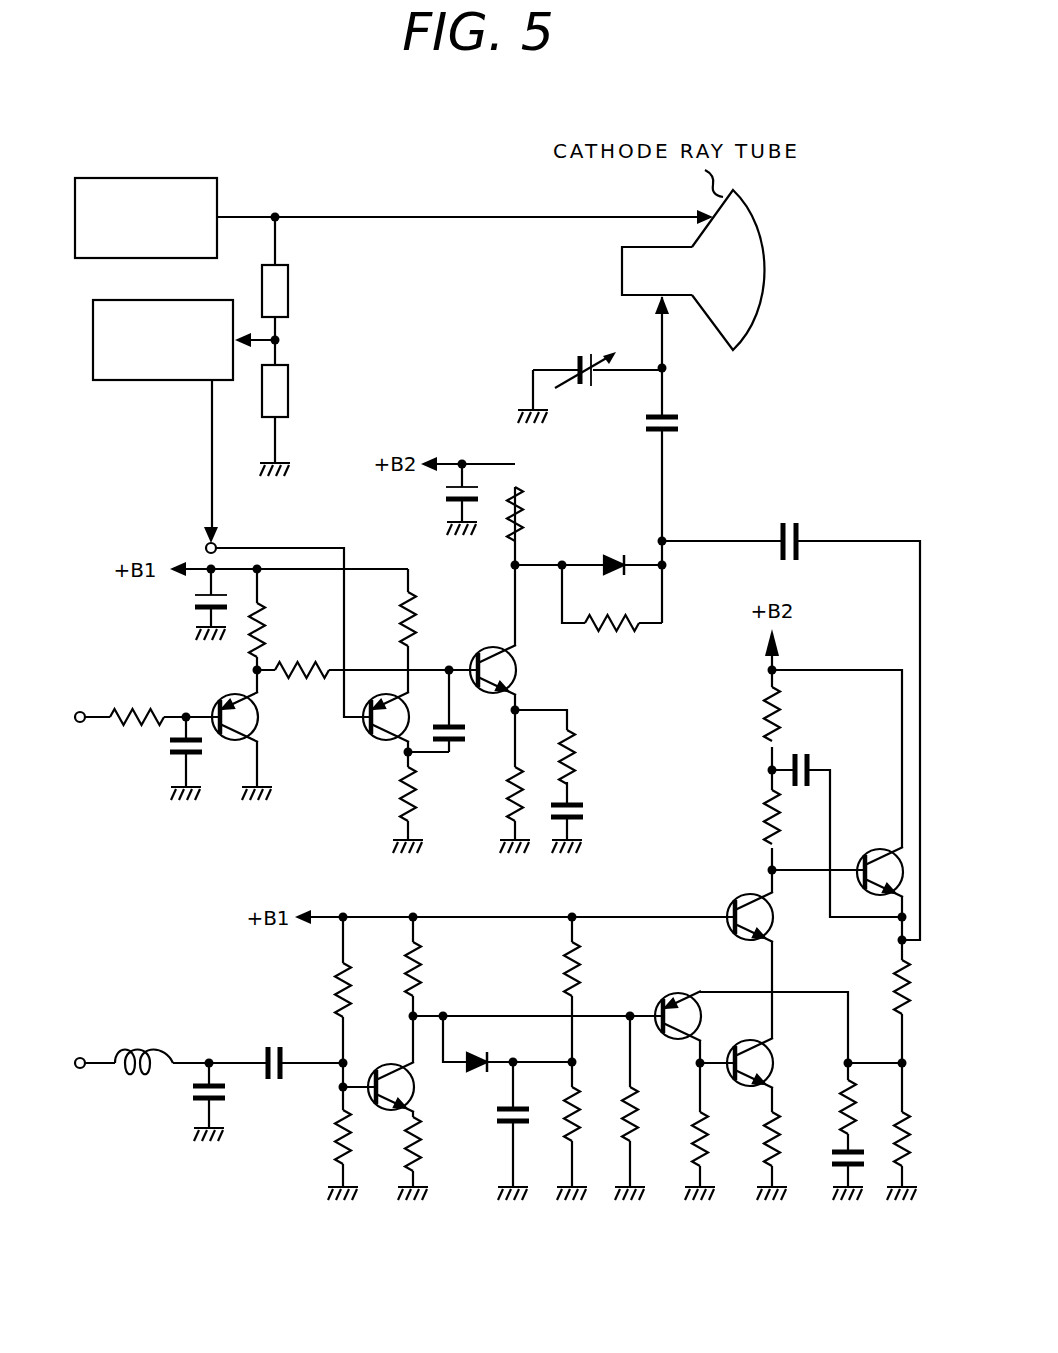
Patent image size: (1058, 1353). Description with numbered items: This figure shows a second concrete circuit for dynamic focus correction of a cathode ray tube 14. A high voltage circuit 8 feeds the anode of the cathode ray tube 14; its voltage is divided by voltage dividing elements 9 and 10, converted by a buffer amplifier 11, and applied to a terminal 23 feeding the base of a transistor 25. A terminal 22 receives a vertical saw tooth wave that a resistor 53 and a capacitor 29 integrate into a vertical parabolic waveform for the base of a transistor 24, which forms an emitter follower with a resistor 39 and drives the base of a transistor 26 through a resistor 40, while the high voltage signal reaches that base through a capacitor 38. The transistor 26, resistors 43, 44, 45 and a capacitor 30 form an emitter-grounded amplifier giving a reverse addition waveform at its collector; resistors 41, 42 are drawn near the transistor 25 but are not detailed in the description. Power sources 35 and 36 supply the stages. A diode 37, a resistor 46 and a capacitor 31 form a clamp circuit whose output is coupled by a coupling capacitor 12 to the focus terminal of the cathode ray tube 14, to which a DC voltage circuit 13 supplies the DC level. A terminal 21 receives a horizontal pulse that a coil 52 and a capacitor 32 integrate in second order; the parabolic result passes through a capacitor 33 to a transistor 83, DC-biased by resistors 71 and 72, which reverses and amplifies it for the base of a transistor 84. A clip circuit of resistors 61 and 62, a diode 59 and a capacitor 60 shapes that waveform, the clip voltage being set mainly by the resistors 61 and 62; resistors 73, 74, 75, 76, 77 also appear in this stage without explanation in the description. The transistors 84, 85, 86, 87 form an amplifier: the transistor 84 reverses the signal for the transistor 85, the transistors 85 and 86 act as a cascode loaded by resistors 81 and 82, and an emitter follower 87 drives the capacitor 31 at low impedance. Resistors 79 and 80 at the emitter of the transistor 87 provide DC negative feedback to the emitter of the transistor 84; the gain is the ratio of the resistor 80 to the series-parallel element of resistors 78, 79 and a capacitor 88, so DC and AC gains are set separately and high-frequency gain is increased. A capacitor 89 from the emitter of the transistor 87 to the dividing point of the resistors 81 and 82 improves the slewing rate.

The high voltage circuit 8 is at (219, 195).
The voltage dividing element 9 is at (289, 290).
The voltage dividing element 10 is at (289, 390).
The buffer amplifier 11 is at (125, 382).
The coupling capacitor 12 is at (686, 422).
The DC voltage circuit 13 is at (585, 395).
The cathode ray tube 14 is at (735, 352).
The terminal 21 is at (80, 1070).
The terminal 22 is at (80, 725).
The terminal 23 is at (205, 546).
The transistor 24 is at (260, 725).
The transistor 25 is at (410, 712).
The transistor 26 is at (520, 672).
The capacitor 29 is at (173, 762).
The capacitor 30 is at (590, 815).
The capacitor 31 is at (803, 532).
The capacitor 32 is at (232, 1100).
The capacitor 33 is at (261, 1047).
The power source 35 is at (173, 618).
The power source 36 is at (425, 508).
The diode 37 is at (618, 554).
The capacitor 38 is at (475, 735).
The resistor 39 is at (275, 622).
The resistor 40 is at (313, 688).
The resistor 41 is at (393, 803).
The resistor 42 is at (428, 612).
The resistor 43 is at (496, 803).
The resistor 44 is at (585, 766).
The resistor 45 is at (533, 510).
The resistor 46 is at (615, 640).
The coil 52 is at (143, 1078).
The resistor 53 is at (121, 702).
The diode 59 is at (497, 1049).
The capacitor 60 is at (496, 1126).
The resistor 61 is at (590, 957).
The resistor 62 is at (560, 1125).
The resistor 71 is at (323, 989).
The resistor 72 is at (328, 1148).
The resistor 73 is at (430, 957).
The resistor 74 is at (430, 1160).
The resistor 75 is at (645, 1101).
The resistor 76 is at (680, 1140).
The resistor 77 is at (752, 1140).
The resistor 78 is at (842, 1091).
The resistor 79 is at (896, 1118).
The resistor 80 is at (884, 980).
The resistor 81 is at (753, 830).
The resistor 82 is at (753, 718).
The transistor 83 is at (418, 1092).
The transistor 84 is at (702, 1020).
The transistor 85 is at (769, 1052).
The transistor 86 is at (775, 920).
The emitter follower 87 is at (874, 849).
The capacitor 88 is at (837, 1145).
The capacitor 89 is at (821, 758).